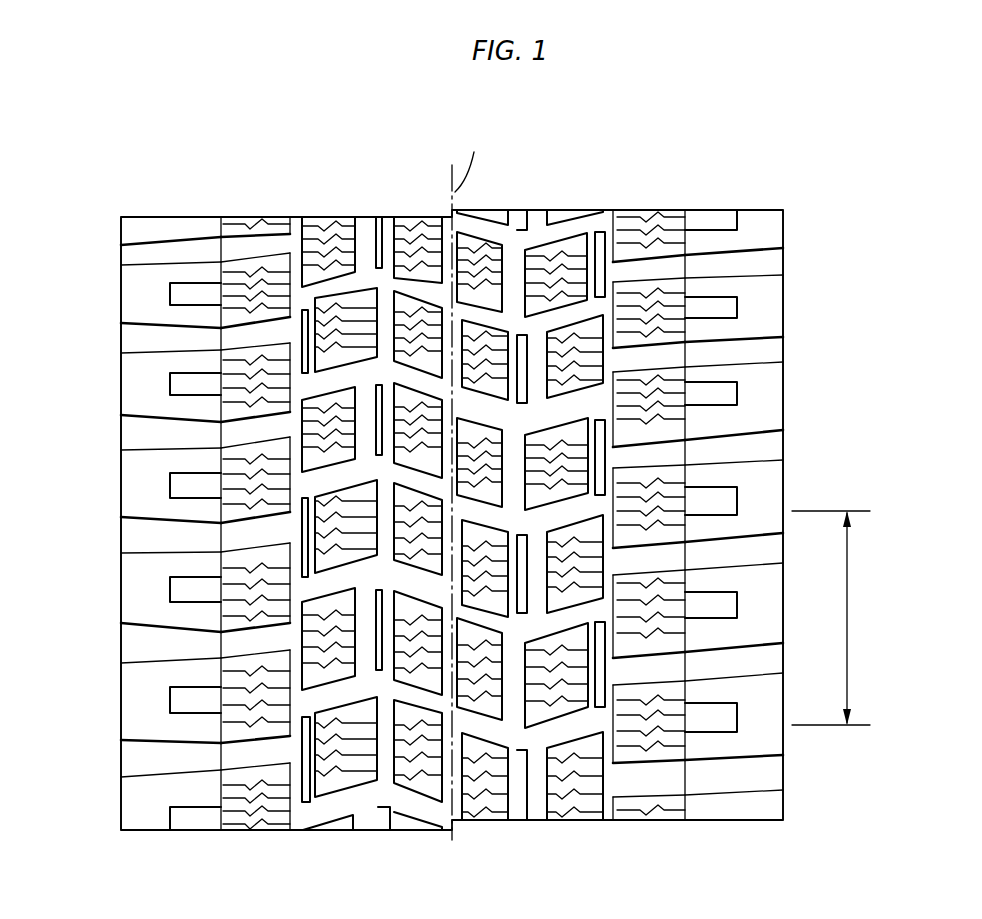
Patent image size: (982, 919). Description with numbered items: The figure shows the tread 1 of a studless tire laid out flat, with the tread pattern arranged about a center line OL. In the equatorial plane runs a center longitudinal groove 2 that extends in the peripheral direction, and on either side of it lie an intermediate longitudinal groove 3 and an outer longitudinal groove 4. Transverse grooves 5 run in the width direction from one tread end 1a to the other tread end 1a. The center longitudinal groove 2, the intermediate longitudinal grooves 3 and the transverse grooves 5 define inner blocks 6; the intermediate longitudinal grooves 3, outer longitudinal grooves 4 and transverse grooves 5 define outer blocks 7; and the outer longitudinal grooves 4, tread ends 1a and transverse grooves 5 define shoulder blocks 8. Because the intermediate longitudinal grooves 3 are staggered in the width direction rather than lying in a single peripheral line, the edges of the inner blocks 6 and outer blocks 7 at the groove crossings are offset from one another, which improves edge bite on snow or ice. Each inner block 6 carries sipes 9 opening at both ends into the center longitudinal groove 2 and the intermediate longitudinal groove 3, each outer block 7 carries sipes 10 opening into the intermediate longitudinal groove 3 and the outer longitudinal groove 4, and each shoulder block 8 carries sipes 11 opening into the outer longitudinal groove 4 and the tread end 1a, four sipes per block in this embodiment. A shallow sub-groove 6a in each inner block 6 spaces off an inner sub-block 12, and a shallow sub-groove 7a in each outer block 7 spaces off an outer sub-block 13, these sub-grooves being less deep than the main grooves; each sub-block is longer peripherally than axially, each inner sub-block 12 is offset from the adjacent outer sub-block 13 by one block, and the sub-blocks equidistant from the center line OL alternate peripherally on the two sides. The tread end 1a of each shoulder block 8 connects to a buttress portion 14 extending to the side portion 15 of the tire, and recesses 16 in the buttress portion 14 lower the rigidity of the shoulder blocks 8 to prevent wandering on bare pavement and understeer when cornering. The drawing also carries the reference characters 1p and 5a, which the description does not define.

The tread 1 is at (661, 190).
The tread end 1a is at (222, 832).
The pitch length 1p is at (831, 618).
The center longitudinal groove 2 is at (432, 226).
The intermediate longitudinal groove 3 is at (360, 222).
The outer longitudinal groove 4 is at (297, 222).
The transverse groove 5 is at (392, 222).
The shoulder lateral groove portion 5a is at (135, 768).
The inner block 6 is at (470, 795).
The sub-groove 6a is at (522, 528).
The outer block 7 is at (358, 780).
The sub-groove 7a is at (622, 410).
The shoulder block 8 is at (235, 258).
The sipe 9 is at (403, 785).
The sipe 10 is at (330, 773).
The sipe 11 is at (268, 805).
The inner sub-block 12 is at (330, 672).
The outer sub-block 13 is at (270, 800).
The buttress portion 14 is at (200, 625).
The side portion 15 is at (115, 448).
The recess 16 is at (170, 578).